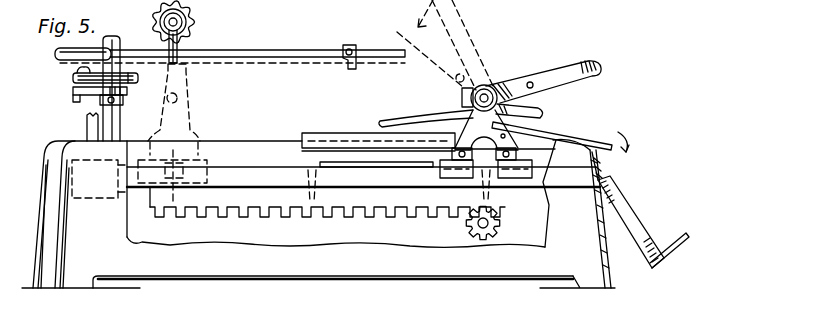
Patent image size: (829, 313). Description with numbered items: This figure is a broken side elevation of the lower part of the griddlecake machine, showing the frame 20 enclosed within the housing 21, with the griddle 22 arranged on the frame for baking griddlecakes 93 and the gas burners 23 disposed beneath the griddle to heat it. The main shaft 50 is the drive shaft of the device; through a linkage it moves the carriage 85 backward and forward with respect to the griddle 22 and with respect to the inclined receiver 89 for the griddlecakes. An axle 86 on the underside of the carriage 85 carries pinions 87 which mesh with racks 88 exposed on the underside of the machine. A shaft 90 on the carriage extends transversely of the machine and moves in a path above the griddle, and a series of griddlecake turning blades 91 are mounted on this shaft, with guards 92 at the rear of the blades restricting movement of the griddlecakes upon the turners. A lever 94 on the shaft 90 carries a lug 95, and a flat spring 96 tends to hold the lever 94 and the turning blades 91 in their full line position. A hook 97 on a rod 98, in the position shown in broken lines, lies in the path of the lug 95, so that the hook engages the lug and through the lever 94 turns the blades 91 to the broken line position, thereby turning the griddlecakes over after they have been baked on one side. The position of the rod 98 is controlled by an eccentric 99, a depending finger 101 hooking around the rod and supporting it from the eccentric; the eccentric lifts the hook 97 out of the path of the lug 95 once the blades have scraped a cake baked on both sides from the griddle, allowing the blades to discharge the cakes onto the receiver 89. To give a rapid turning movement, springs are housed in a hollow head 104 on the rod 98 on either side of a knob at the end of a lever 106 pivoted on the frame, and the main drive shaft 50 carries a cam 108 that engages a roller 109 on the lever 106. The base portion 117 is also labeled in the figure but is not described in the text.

The frame 20 is at (199, 193).
The housing 21 is at (48, 150).
The griddle 22 is at (337, 132).
The gas burners 23 is at (380, 167).
The main shaft 50 is at (118, 110).
The carriage 85 is at (540, 122).
The axle 86 is at (483, 230).
The pinions 87 is at (492, 227).
The racks 88 is at (397, 197).
The inclined receiver 89 is at (641, 250).
The shaft 90 is at (493, 82).
The turning blades 91 is at (474, 56).
The guards 92 is at (541, 100).
The griddlecakes 93 is at (636, 222).
The lever 94 is at (185, 89).
The lug 95 is at (538, 72).
The flat spring 96 is at (425, 123).
The hook 97 is at (354, 67).
The rod 98 is at (318, 49).
The eccentric 99 is at (186, 33).
The depending finger 101 is at (227, 46).
The hollow head 104 is at (66, 62).
The lever 106 is at (72, 78).
The cam 108 is at (87, 97).
The roller 109 is at (70, 93).
The base 117 is at (88, 308).